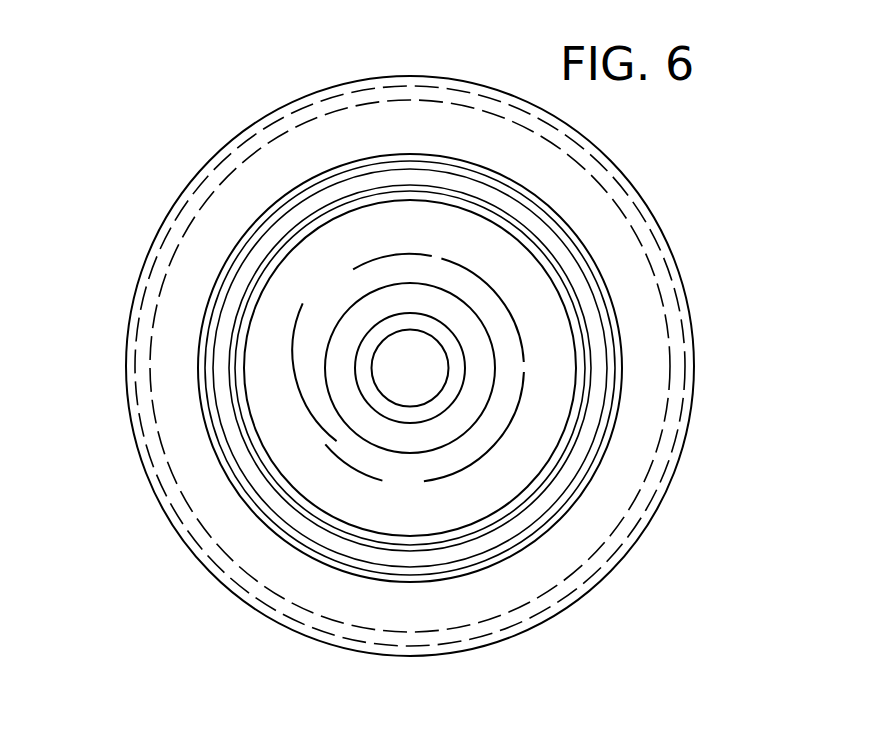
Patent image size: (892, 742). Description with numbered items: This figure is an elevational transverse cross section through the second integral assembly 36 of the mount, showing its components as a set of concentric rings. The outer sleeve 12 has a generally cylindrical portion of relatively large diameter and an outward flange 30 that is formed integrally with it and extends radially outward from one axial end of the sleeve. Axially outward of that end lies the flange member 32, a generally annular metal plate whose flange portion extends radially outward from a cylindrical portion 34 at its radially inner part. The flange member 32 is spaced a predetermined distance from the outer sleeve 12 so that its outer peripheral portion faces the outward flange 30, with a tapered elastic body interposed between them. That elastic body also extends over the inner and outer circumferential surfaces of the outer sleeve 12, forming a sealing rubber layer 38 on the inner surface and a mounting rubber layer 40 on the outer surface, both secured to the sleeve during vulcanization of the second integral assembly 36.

The outer sleeve 12 is at (618, 292).
The outward flange 30 is at (680, 403).
The flange member 32 is at (154, 492).
The cylindrical portion 34 is at (412, 320).
The second integral assembly 36 is at (196, 128).
The sealing rubber layer 38 is at (328, 540).
The mounting rubber layer 40 is at (210, 318).